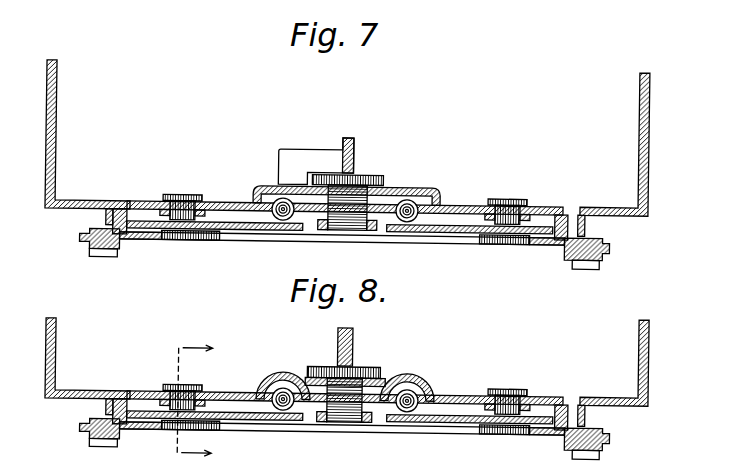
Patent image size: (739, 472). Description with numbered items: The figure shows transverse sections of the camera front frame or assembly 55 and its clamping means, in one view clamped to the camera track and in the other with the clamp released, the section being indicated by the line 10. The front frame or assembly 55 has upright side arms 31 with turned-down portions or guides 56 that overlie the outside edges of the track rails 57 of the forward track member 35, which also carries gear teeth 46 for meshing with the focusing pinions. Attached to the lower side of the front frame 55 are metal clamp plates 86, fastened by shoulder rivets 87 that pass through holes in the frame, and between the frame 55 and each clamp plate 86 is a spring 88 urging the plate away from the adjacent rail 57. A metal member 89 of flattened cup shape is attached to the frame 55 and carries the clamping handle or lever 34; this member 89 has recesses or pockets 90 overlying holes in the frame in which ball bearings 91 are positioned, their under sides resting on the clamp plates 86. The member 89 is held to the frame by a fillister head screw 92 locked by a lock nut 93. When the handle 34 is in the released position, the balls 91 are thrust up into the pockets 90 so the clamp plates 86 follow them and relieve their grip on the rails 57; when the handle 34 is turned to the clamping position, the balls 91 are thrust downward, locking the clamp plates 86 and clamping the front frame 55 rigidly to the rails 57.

In FIG. 8, the section line 10- 10 is at (207, 402).
In FIG. 7, the upright side arms 31 is at (55, 122).
In FIG. 8, the upright side arms 31 is at (347, 359).
In FIG. 7, the clamp handle or lever 34 is at (305, 150).
In FIG. 8, the clamp handle or lever 34 is at (361, 347).
In FIG. 7, the forward track member 35 is at (388, 243).
In FIG. 8, the forward track member 35 is at (341, 443).
In FIG. 7, the gear teeth 46 is at (105, 260).
In FIG. 8, the gear teeth 46 is at (344, 445).
In FIG. 7, the camera front frame or assembly 55 is at (240, 204).
In FIG. 8, the camera front frame or assembly 55 is at (345, 386).
In FIG. 7, the guides 56 is at (106, 226).
In FIG. 8, the guides 56 is at (346, 414).
In FIG. 7, the track rails 57 is at (127, 212).
In FIG. 8, the track rails 57 is at (348, 391).
In FIG. 7, the clamp plates 86 is at (228, 232).
In FIG. 8, the clamp plates 86 is at (339, 435).
In FIG. 7, the shoulder rivets 87 is at (182, 197).
In FIG. 8, the shoulder rivets 87 is at (345, 384).
In FIG. 7, the spring 88 is at (165, 233).
In FIG. 8, the spring 88 is at (342, 443).
In FIG. 7, the metal member of flattened cup shape 89 is at (393, 190).
In FIG. 8, the metal member of flattened cup shape 89 is at (302, 379).
In FIG. 8, the recesses or pockets 90 is at (349, 371).
In FIG. 7, the ball bearings 91 is at (275, 196).
In FIG. 8, the ball bearings 91 is at (351, 382).
In FIG. 7, the fillister head screw 92 is at (365, 178).
In FIG. 8, the fillister head screw 92 is at (354, 360).
In FIG. 7, the lock nut 93 is at (323, 228).
In FIG. 8, the lock nut 93 is at (345, 400).